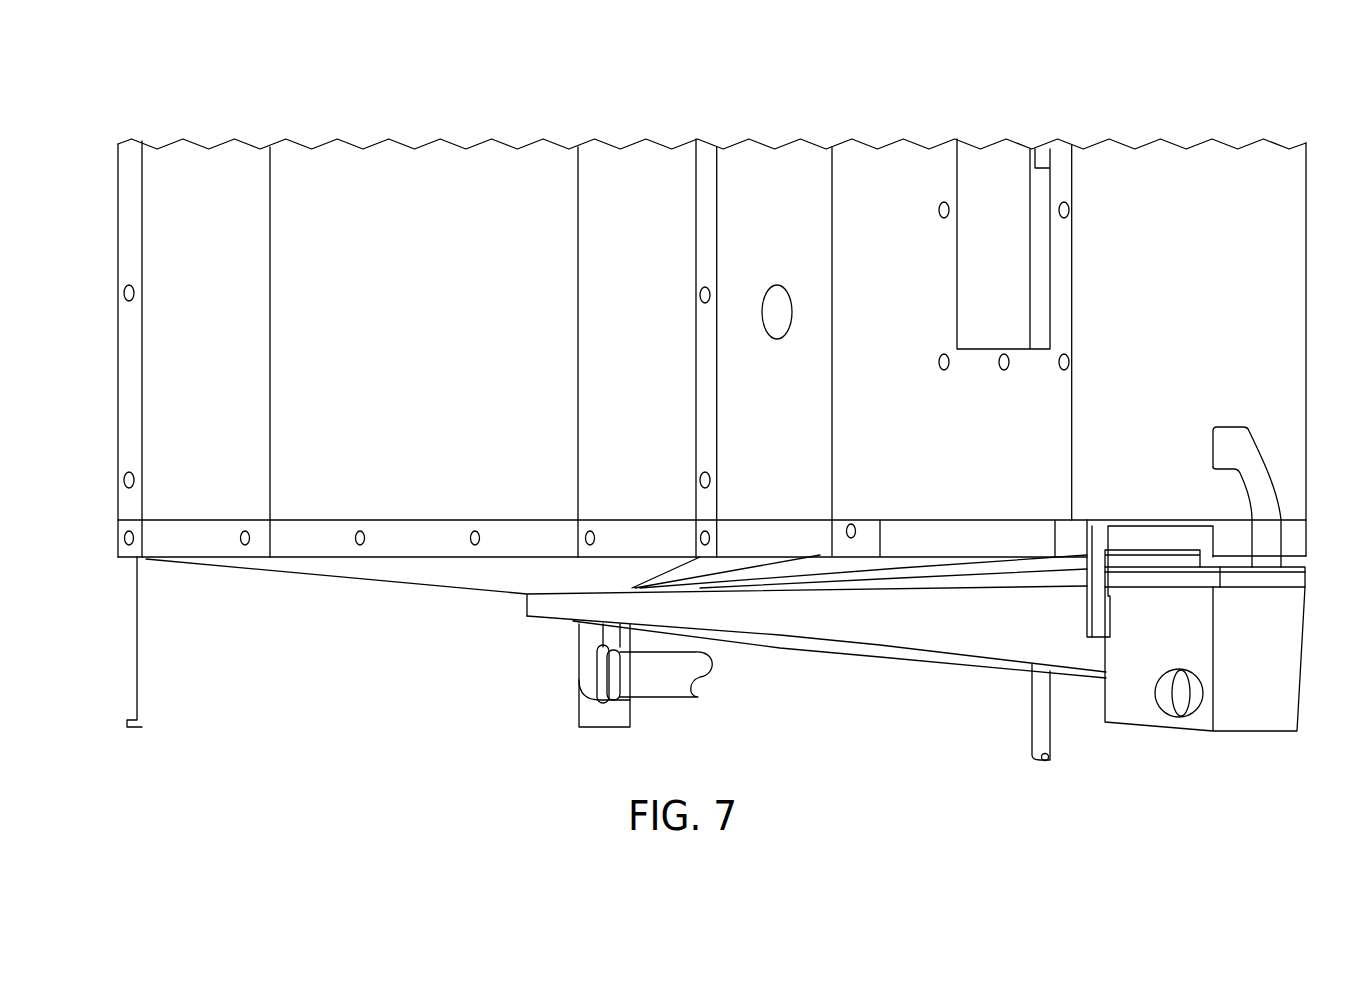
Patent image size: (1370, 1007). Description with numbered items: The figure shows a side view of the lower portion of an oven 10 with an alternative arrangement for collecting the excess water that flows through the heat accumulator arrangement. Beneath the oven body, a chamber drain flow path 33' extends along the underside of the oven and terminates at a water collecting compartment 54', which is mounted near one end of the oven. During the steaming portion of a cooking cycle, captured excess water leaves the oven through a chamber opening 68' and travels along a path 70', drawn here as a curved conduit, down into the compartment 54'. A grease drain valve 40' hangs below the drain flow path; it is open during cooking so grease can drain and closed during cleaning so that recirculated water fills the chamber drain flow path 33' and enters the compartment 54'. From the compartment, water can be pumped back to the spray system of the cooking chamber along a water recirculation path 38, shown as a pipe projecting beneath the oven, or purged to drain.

The oven 10 is at (815, 124).
The chamber drain flow path 33' is at (626, 641).
The water recirculation path 38 is at (672, 688).
The grease drain valve 40' is at (1009, 714).
The water collecting compartment 54' is at (1229, 649).
The chamber opening 68' is at (1150, 526).
The path 70' is at (1247, 473).